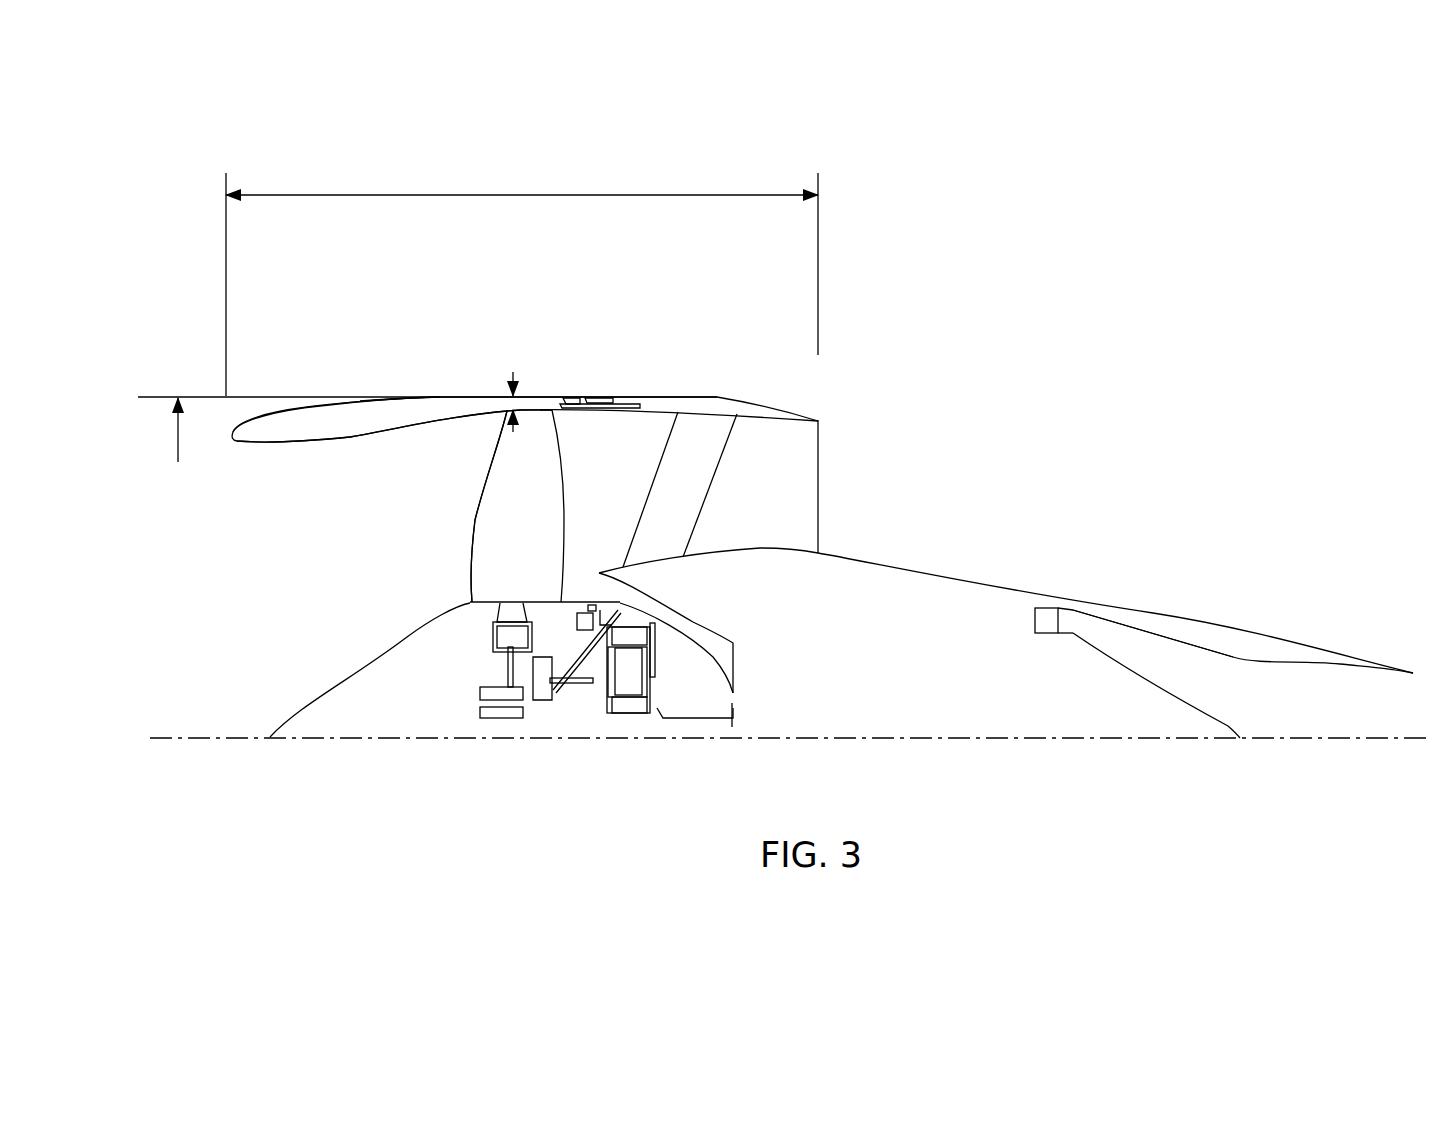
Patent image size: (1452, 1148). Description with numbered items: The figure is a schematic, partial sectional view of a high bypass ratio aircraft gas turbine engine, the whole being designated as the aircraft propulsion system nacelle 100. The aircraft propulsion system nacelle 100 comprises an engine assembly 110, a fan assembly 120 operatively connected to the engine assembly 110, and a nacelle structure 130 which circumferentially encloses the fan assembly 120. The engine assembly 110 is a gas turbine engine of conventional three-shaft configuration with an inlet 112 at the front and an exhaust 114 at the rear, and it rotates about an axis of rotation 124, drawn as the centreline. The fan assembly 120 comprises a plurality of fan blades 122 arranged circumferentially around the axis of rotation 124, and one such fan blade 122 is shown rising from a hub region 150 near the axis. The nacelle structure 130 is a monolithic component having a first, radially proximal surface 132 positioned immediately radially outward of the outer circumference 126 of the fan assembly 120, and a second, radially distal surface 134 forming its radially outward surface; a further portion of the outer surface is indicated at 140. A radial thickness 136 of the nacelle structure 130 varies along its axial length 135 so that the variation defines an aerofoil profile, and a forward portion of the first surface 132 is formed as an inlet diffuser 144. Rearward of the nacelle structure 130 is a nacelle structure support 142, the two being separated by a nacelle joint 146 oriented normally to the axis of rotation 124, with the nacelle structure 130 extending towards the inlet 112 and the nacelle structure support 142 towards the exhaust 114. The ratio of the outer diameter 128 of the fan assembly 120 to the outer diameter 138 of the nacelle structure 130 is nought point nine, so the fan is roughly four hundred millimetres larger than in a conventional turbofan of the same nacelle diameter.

The aircraft propulsion system nacelle 100 is at (703, 289).
The engine assembly 110 is at (912, 566).
The inlet 112 is at (243, 581).
The exhaust 114 is at (1226, 561).
The fan assembly 120 is at (518, 468).
The fan blades 122 is at (478, 507).
The axis of rotation 124 is at (268, 737).
The outer circumference of the fan assembly 126 is at (533, 408).
The outer diameter of the fan assembly 128 is at (545, 407).
The nacelle structure 130 is at (360, 401).
The first, radially proximal surface 132 is at (355, 437).
The second, radially distal surface 134 is at (316, 402).
The axial length of the nacelle structure 135 is at (482, 193).
The radial thickness of the nacelle structure 136 is at (513, 372).
The outer diameter of the nacelle structure 138 is at (149, 430).
The nacelle outer surface portion 140 is at (383, 398).
The nacelle structure support 142 is at (678, 399).
The inlet diffuser 144 is at (400, 420).
The nacelle joint 146 is at (588, 398).
The fan hub / rotor assembly 150 is at (483, 713).